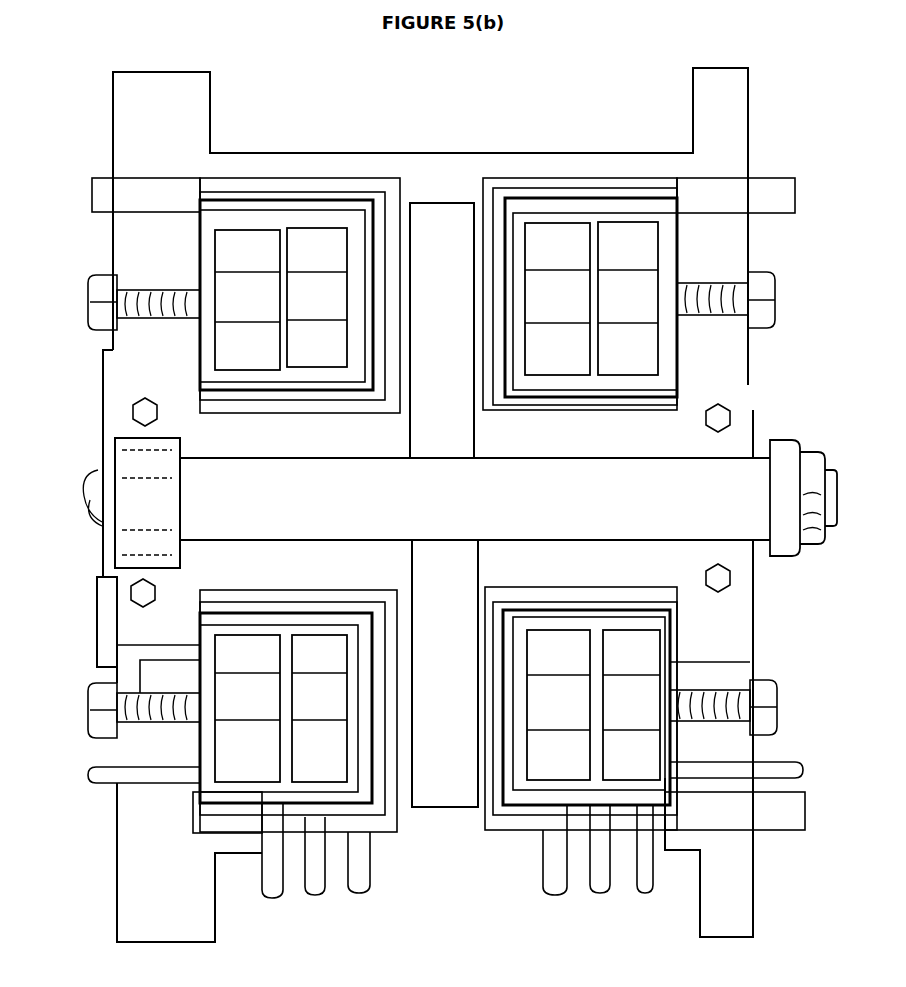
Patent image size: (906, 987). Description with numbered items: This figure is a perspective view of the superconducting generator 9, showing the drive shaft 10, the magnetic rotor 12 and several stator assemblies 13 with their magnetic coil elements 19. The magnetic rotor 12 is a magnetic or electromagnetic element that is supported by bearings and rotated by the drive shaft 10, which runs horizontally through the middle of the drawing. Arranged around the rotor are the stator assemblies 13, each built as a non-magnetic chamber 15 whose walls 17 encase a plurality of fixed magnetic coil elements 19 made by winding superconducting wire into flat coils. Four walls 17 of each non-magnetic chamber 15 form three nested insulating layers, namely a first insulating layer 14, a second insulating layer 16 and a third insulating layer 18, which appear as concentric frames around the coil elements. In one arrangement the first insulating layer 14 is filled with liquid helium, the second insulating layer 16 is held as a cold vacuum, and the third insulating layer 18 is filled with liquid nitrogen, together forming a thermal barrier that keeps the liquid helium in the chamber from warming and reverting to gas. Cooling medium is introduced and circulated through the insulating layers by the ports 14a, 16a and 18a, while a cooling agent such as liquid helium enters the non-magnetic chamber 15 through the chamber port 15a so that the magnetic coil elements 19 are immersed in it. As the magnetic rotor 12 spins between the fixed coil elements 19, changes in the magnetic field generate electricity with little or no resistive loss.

The generator 9 is at (748, 133).
The drive shaft 10 is at (830, 505).
The magnetic rotor 12 is at (753, 433).
The stator assembly 13 is at (200, 283).
The first insulating layer 14 is at (348, 205).
The port 14a is at (205, 381).
The non-magnetic chamber 15 is at (262, 228).
The chamber port 15a is at (670, 650).
The second insulating layer 16 is at (330, 195).
The port 16a is at (200, 397).
The wall 17 is at (200, 192).
The third insulating layer 18 is at (308, 180).
The port 18a is at (200, 407).
The magnetic coil element 19 is at (230, 237).